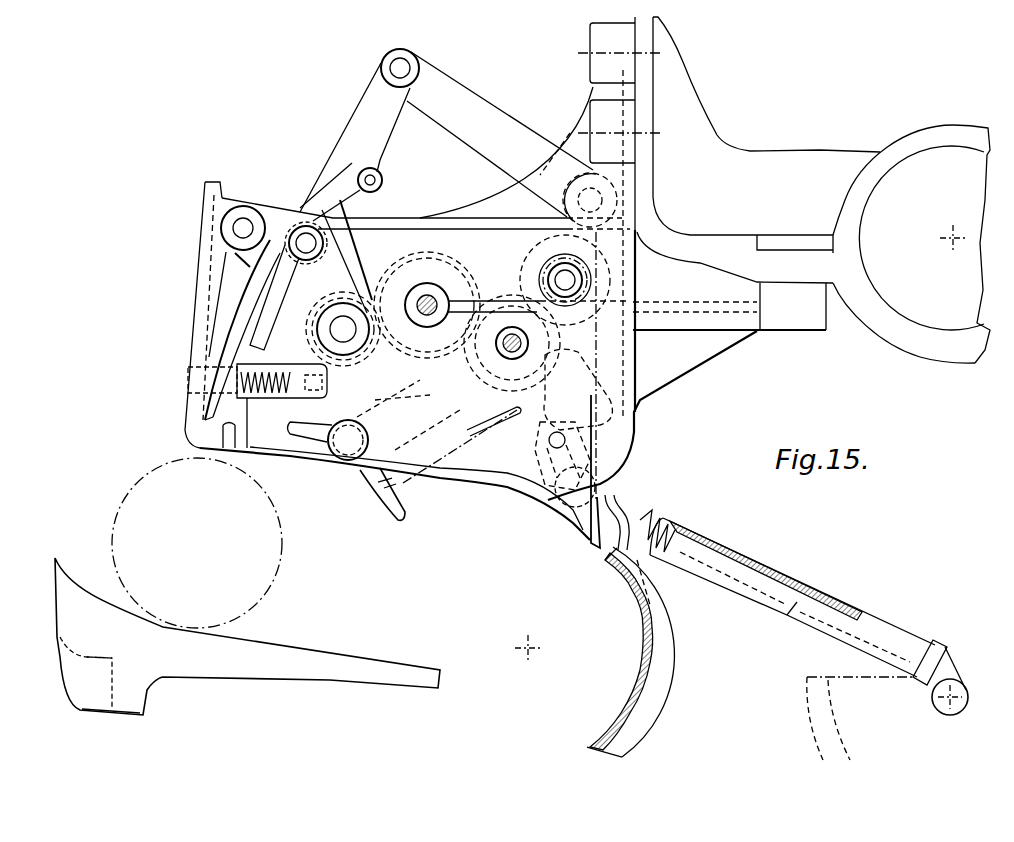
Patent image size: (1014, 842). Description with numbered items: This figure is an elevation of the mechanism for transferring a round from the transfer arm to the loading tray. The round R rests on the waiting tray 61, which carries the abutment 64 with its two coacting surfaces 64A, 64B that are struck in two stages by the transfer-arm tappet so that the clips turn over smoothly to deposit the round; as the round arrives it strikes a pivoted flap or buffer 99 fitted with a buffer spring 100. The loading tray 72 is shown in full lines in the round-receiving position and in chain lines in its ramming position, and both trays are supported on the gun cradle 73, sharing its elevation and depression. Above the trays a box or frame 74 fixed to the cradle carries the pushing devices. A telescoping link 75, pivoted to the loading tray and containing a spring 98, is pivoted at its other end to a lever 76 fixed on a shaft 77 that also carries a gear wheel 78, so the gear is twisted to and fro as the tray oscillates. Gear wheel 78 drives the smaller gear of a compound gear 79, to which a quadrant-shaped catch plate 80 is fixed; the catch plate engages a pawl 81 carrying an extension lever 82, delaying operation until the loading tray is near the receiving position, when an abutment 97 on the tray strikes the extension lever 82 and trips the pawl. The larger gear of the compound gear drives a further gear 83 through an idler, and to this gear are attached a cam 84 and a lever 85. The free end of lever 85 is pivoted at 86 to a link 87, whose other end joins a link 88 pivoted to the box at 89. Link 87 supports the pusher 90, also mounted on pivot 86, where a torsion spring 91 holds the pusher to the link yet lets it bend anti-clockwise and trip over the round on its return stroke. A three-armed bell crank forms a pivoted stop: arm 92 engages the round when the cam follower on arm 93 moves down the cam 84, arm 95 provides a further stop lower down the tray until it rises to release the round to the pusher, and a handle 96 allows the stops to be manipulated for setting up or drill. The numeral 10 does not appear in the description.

The spring 10 is at (208, 400).
The waiting tray 61 is at (325, 652).
The abutment 64 is at (73, 715).
The abutment surface 64A is at (98, 715).
The abutment surface 64B is at (93, 672).
The loading tray 72 is at (657, 657).
The gun cradle 73 is at (868, 318).
The box or frame 74 is at (458, 237).
The telescoping link 75 is at (653, 505).
The lever 76 is at (600, 480).
The shaft 77 is at (557, 278).
The gear wheel 78 is at (607, 272).
The compound gear 79 is at (540, 343).
The catch plate 80 is at (605, 390).
The pawl 81 is at (615, 418).
The extension lever 82 is at (595, 542).
The gear 83 is at (375, 280).
The cam 84 is at (408, 415).
The lever 85 is at (337, 266).
The pivot 86 is at (305, 238).
The link 87 is at (352, 124).
The link 88 is at (508, 125).
The pivot 89 is at (600, 198).
The pusher 90 is at (205, 450).
The torsion spring 91 is at (320, 218).
The arm 92 is at (270, 468).
The arm 93 is at (462, 445).
The arm 95 is at (407, 516).
The handle 96 is at (293, 422).
The abutment 97 is at (617, 505).
The spring 98 is at (690, 525).
The pivoted flap or buffer 99 is at (195, 320).
The buffer spring 100 is at (210, 418).
The round R is at (283, 546).